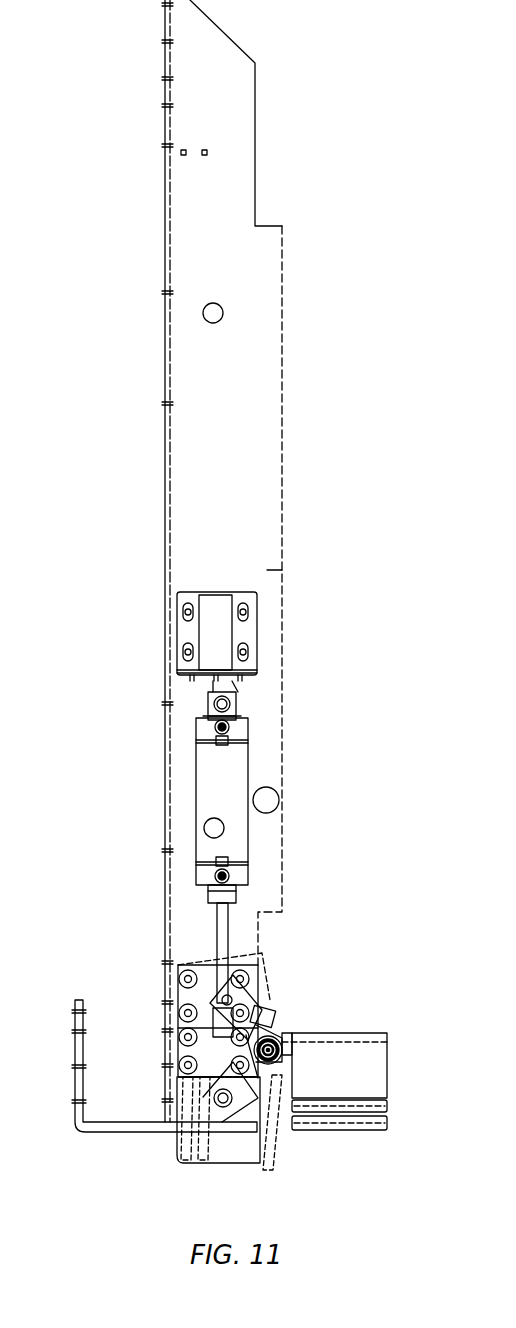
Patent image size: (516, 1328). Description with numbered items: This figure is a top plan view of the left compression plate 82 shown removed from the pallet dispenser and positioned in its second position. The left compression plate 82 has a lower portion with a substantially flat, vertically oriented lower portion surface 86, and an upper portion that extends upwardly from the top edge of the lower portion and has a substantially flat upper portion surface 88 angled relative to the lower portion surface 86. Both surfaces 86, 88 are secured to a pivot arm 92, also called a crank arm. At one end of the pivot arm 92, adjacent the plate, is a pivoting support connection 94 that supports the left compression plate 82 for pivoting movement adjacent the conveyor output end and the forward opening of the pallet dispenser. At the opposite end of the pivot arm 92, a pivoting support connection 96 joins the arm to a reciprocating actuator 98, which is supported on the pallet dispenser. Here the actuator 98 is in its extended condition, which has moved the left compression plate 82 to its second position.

The left compression plate 82 is at (283, 1090).
The lower portion surface 86 is at (365, 1033).
The upper portion surface 88 is at (347, 1032).
The pivot arm 92 is at (258, 1100).
The pivoting support connection 94 is at (283, 1048).
The pivoting support connection 96 is at (217, 1105).
The reciprocating actuator 98 is at (208, 790).